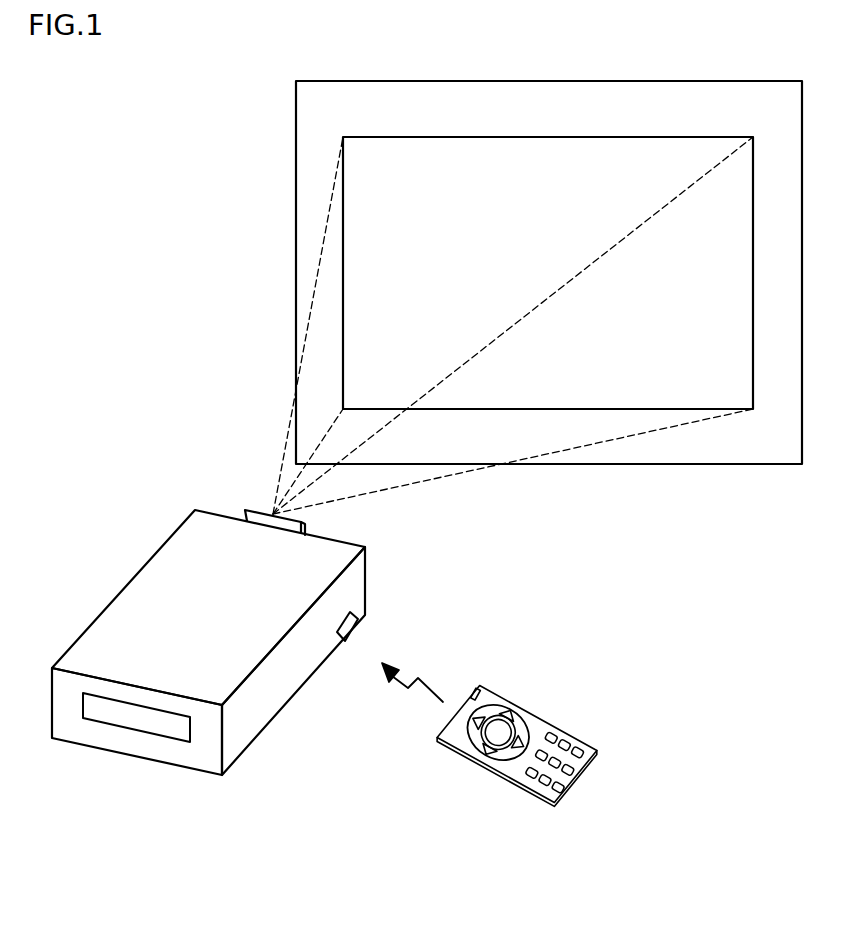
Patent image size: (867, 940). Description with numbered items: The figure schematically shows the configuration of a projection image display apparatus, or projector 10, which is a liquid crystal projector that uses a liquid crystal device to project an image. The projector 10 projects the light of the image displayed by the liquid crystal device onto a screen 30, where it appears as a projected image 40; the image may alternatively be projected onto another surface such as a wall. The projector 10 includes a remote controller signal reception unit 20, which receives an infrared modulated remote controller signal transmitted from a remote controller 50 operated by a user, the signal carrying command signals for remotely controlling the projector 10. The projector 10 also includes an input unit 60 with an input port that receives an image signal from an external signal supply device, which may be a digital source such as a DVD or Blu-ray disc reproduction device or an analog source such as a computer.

The projection image display apparatus 10 is at (155, 573).
The remote controller signal reception unit 20 is at (348, 630).
The screen 30 is at (672, 81).
The projected image 40 is at (672, 137).
The remote controller 50 is at (542, 728).
The input unit 60 is at (108, 710).